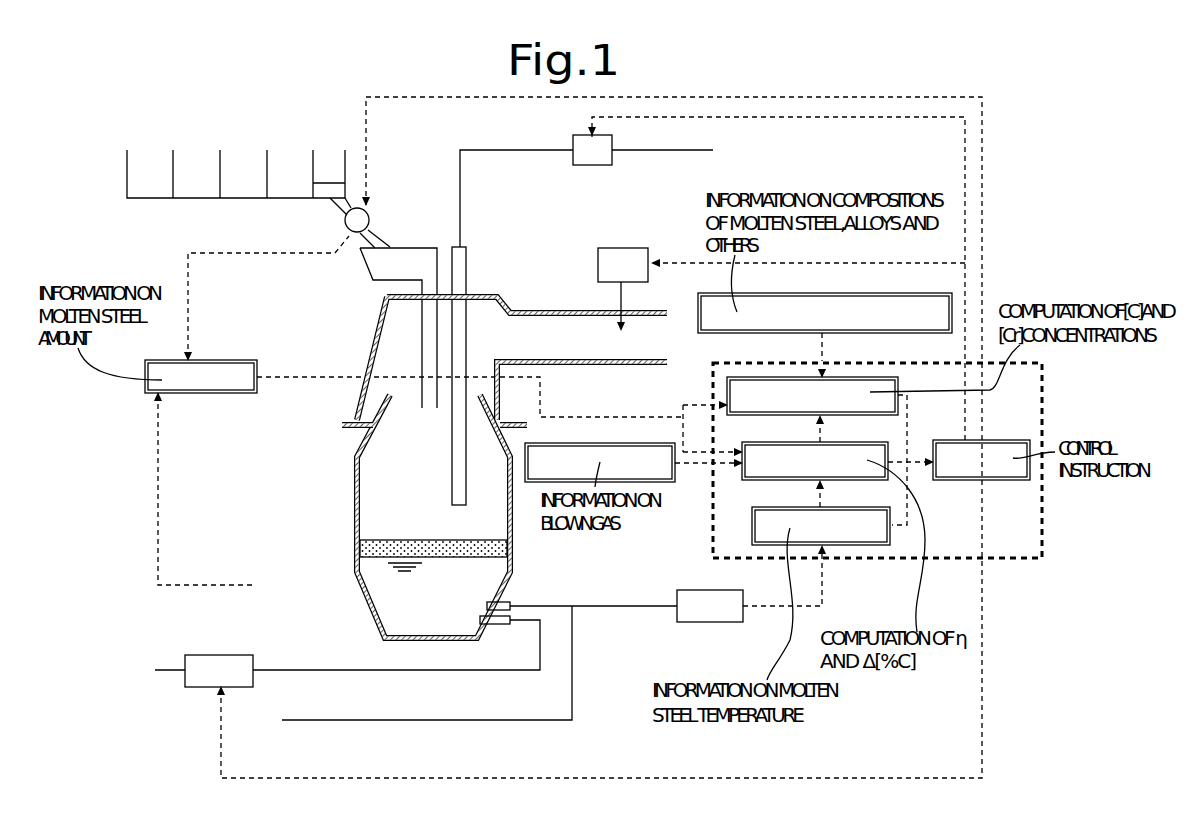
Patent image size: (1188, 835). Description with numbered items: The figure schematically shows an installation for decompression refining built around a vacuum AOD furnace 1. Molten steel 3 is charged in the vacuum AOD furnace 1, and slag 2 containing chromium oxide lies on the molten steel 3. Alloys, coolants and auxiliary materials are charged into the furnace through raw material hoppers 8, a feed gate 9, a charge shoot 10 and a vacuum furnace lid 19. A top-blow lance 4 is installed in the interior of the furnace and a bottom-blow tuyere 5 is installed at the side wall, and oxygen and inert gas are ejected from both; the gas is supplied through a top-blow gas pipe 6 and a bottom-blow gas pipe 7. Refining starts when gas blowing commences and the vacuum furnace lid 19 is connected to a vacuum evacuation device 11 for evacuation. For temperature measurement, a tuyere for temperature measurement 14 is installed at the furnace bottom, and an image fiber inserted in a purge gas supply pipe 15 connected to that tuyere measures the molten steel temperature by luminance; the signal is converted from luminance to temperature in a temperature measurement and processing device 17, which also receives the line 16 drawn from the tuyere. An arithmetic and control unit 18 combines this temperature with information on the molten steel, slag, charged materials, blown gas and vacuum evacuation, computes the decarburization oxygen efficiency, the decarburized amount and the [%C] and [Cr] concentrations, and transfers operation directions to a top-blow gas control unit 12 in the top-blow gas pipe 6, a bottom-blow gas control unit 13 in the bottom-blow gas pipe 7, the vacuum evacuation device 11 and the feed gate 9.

The vacuum AOD furnace 1 is at (355, 512).
The slag 2 is at (380, 548).
The molten steel 3 is at (392, 583).
The top-blow lance 4 is at (452, 460).
The bottom-blow tuyere 5 is at (490, 625).
The top-blow gas pipe 6 is at (459, 175).
The bottom-blow gas pipe 7 is at (302, 672).
The raw material hoppers 8 is at (153, 167).
The feed gate 9 is at (352, 224).
The charge shoot 10 is at (390, 272).
The vacuum evacuation device 11 is at (618, 343).
The top-blow gas control unit 12 is at (606, 155).
The bottom-blow gas control unit 13 is at (218, 658).
The tuyere for temperature measurement 14 is at (507, 602).
The purge gas supply pipe 15 is at (328, 723).
The gas supply pipe 16 is at (657, 603).
The temperature measurement and processing device 17 is at (710, 612).
The arithmetic and control unit 18 is at (627, 257).
The vacuum furnace lid 19 is at (372, 355).